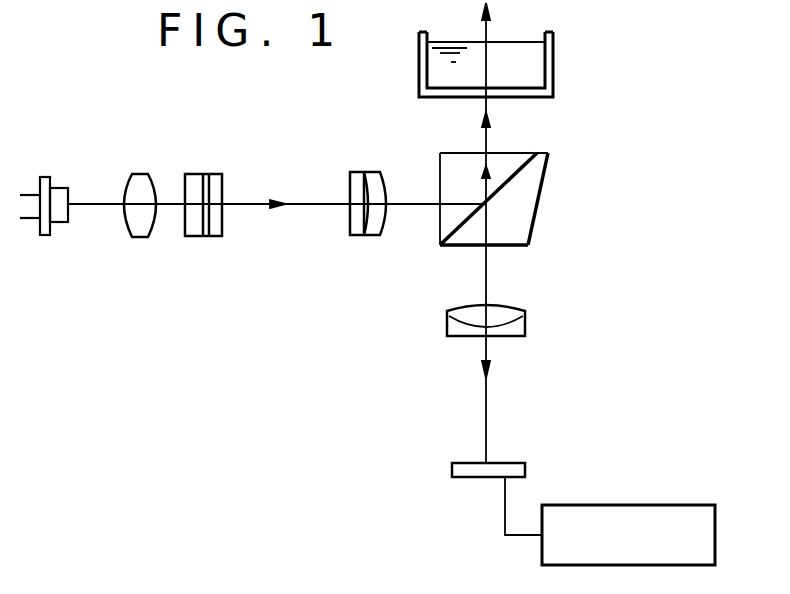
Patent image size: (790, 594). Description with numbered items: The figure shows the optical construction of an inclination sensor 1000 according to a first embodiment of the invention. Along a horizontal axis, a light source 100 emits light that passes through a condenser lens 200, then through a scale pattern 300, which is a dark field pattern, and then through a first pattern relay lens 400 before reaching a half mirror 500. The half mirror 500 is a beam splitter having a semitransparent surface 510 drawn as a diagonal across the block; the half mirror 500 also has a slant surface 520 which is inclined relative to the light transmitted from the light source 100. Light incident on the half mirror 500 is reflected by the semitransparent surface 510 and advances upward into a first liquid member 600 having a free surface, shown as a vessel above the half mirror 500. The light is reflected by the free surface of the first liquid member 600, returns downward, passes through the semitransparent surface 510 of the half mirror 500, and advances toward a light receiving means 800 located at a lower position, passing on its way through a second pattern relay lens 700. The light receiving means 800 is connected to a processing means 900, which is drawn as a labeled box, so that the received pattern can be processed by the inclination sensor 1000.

The light source 100 is at (53, 189).
The condenser lens 200 is at (140, 172).
The scale pattern 300 is at (223, 223).
The first pattern relay lens 400 is at (371, 172).
The half mirror 500 is at (550, 181).
The semitransparent surface 510 is at (511, 164).
The slant surface 520 is at (547, 177).
The first liquid member 600 is at (527, 47).
The second pattern relay lens 700 is at (525, 318).
The light receiving means 800 is at (515, 463).
The processing means 900 is at (688, 503).
The inclination sensor 1000 is at (272, 368).